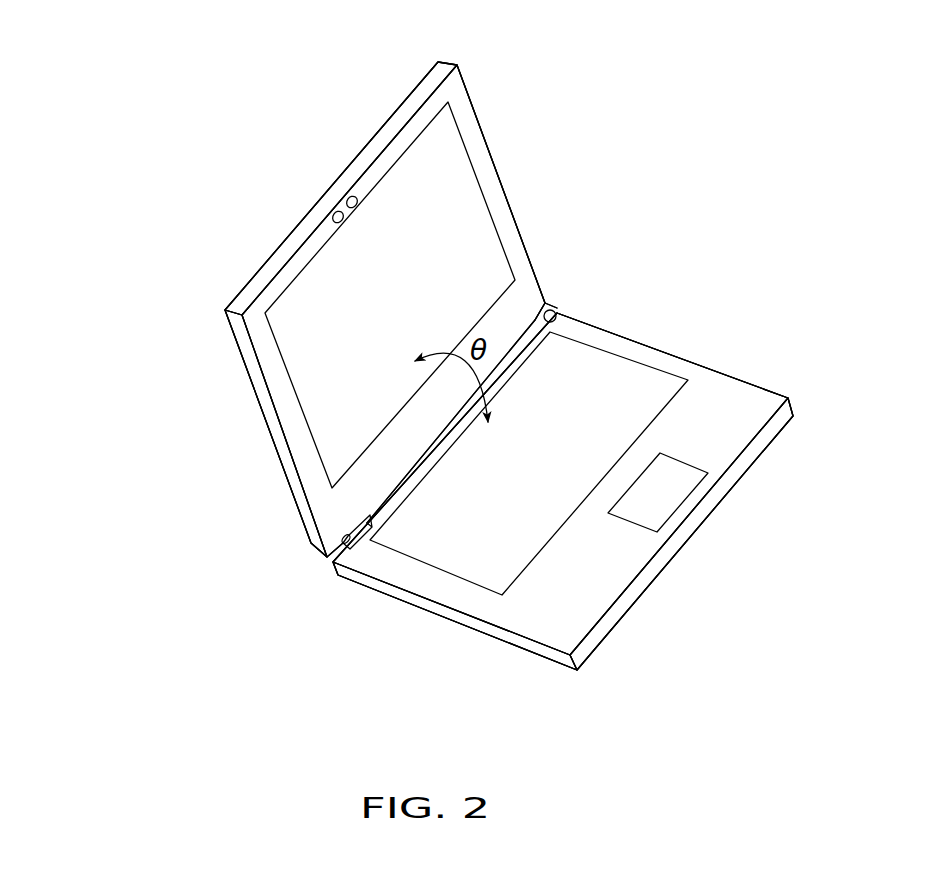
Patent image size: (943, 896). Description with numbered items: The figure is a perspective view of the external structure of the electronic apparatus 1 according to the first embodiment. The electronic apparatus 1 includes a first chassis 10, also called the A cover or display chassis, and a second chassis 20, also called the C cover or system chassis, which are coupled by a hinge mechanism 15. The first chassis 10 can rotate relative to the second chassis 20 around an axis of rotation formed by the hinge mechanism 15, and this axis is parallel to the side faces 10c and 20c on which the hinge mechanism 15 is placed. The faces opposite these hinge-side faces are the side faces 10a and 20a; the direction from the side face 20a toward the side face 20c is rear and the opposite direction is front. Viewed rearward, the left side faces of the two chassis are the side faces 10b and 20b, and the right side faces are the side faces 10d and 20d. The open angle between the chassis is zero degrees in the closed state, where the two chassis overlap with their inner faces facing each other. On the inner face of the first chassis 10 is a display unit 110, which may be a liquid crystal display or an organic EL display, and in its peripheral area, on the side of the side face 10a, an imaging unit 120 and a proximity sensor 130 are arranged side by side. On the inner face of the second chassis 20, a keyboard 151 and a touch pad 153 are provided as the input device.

The electronic apparatus 1 is at (88, 88).
The first chassis 10 is at (215, 481).
The side face 10a is at (282, 257).
The side face 10b is at (260, 394).
The side face 10c is at (553, 306).
The side face 10d is at (490, 144).
The display unit 110 is at (487, 254).
The imaging unit 120 is at (360, 196).
The proximity sensor 130 is at (343, 221).
The hinge mechanism 15 is at (367, 522).
The second chassis 20 is at (667, 624).
The side face 20a is at (777, 424).
The side face 20b is at (496, 634).
The side face 20c is at (336, 572).
The side face 20d is at (758, 387).
The keyboard 151 is at (632, 388).
The touch pad 153 is at (676, 498).